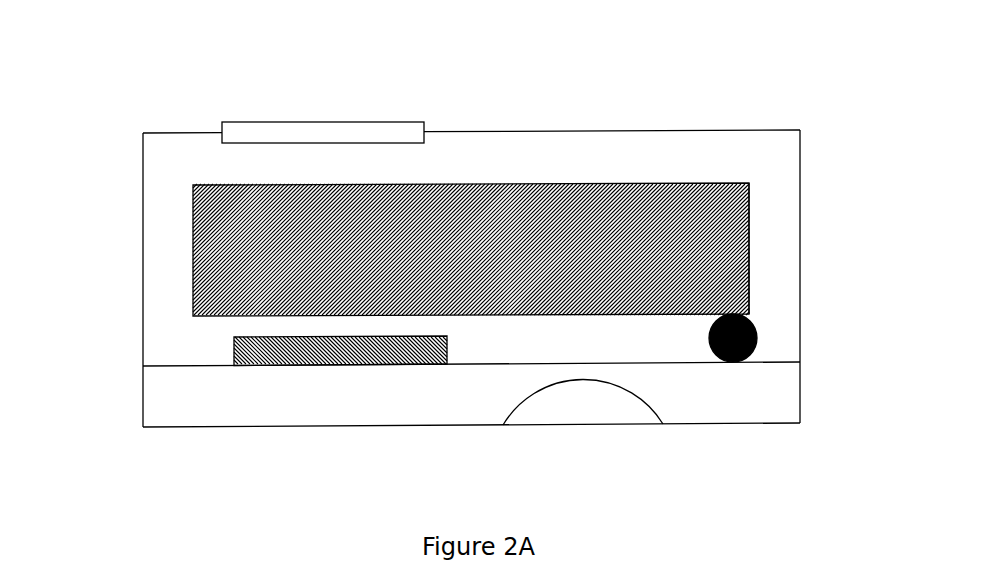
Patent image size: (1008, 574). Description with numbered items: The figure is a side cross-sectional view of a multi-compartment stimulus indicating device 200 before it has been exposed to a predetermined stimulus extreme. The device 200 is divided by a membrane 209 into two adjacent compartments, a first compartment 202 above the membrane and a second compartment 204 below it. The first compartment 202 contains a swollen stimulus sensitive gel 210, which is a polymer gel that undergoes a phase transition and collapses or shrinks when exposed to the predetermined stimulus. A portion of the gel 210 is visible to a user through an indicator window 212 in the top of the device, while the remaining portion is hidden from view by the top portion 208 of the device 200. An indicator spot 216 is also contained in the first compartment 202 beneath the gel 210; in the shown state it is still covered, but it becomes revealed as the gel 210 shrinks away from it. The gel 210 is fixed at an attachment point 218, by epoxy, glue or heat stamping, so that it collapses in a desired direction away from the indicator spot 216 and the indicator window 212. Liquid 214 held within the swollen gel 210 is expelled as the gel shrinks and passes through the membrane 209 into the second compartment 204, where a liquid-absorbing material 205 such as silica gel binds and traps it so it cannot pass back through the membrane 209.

The stimulus indicating device 200 is at (122, 155).
The first compartment 202 is at (162, 195).
The second compartment 204 is at (167, 417).
The liquid-absorbing material 205 is at (578, 412).
The top portion 208 is at (545, 130).
The membrane 209 is at (165, 367).
The swollen stimulus sensitive gel 210 is at (193, 265).
The indicator window 212 is at (313, 132).
The liquid 214 is at (740, 203).
The indicator spot 216 is at (340, 367).
The attachment point 218 is at (758, 342).